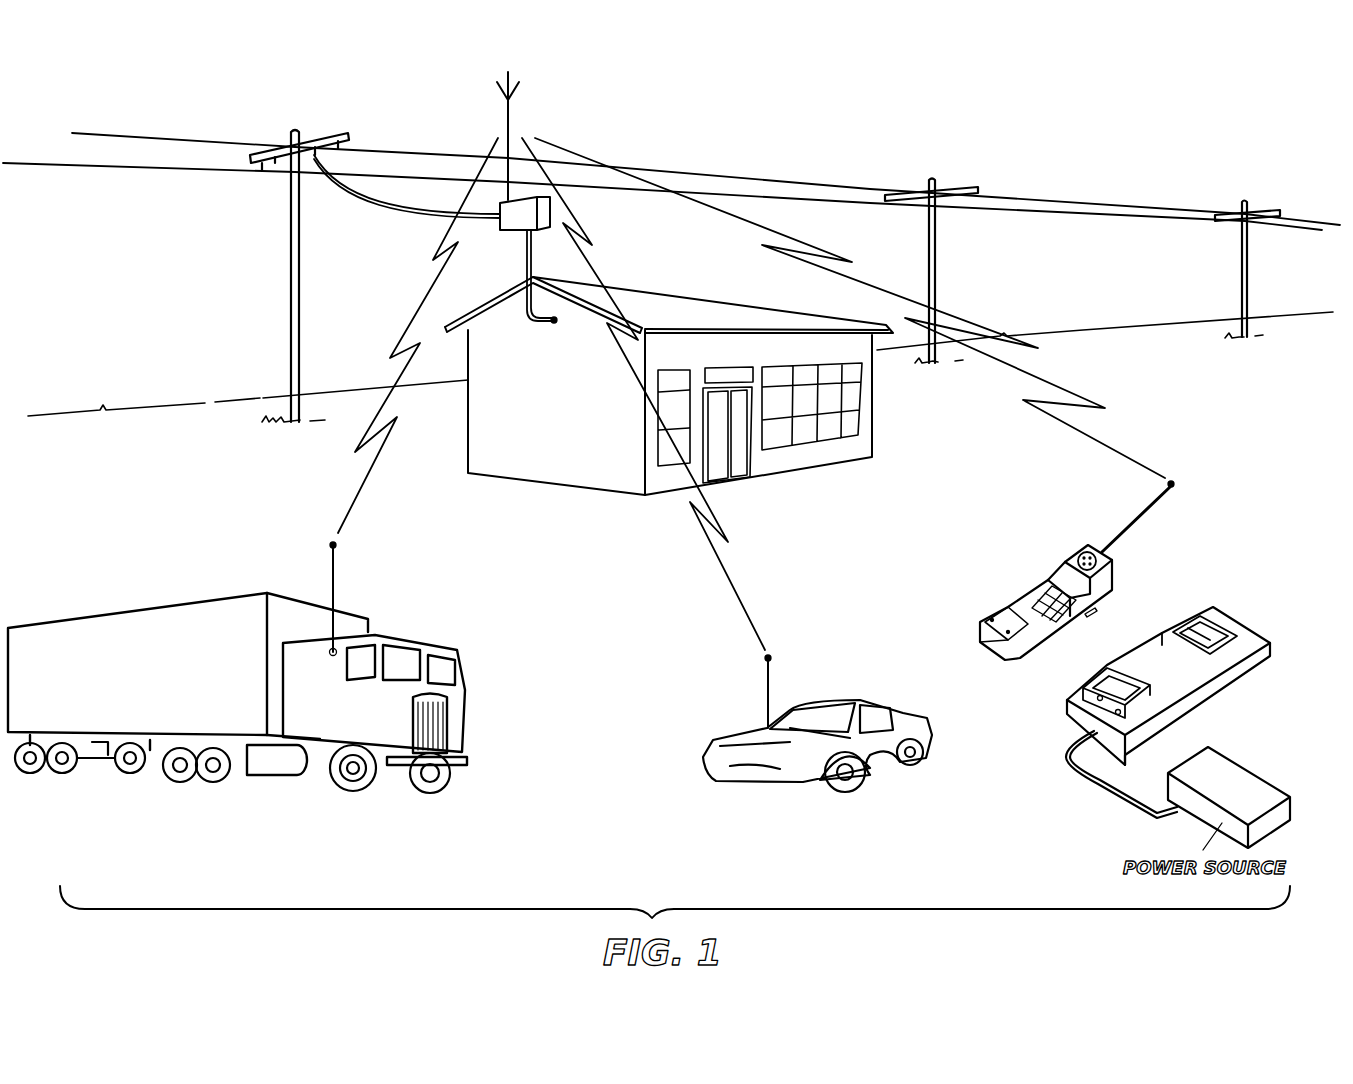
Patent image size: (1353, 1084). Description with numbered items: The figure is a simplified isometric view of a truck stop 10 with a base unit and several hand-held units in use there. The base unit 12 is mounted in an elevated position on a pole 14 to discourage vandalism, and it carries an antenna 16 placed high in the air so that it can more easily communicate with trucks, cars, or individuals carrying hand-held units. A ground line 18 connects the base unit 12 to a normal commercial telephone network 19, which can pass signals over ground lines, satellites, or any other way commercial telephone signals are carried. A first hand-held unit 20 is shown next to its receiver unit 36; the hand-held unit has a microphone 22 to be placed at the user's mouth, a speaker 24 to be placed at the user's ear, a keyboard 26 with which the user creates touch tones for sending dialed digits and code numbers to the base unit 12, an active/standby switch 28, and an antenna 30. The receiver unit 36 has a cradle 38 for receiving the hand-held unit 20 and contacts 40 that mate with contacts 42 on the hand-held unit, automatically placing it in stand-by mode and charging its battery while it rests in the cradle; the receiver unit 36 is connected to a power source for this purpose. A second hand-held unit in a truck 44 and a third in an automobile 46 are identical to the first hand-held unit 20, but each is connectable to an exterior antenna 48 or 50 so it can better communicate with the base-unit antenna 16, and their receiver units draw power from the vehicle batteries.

The truck stop 10 is at (572, 410).
The base unit 12 is at (513, 228).
The pole 14 is at (528, 316).
The antenna 16 is at (505, 108).
The ground line 18 is at (383, 212).
The commercial telephone network 19 is at (812, 178).
The first hand-held unit 20 is at (1056, 594).
The microphone 22 is at (1001, 612).
The speaker 24 is at (1082, 550).
The keyboard 26 is at (1045, 588).
The active/standby switch 28 is at (1092, 620).
The antenna 30 is at (1155, 505).
The receiver unit 36 is at (1162, 672).
The cradle 38 is at (1197, 636).
The contacts 40 is at (1110, 692).
The contacts 42 is at (987, 645).
The truck 44 is at (183, 595).
The automobile 46 is at (832, 698).
The exterior antenna 48 is at (340, 592).
The exterior antenna 50 is at (765, 675).